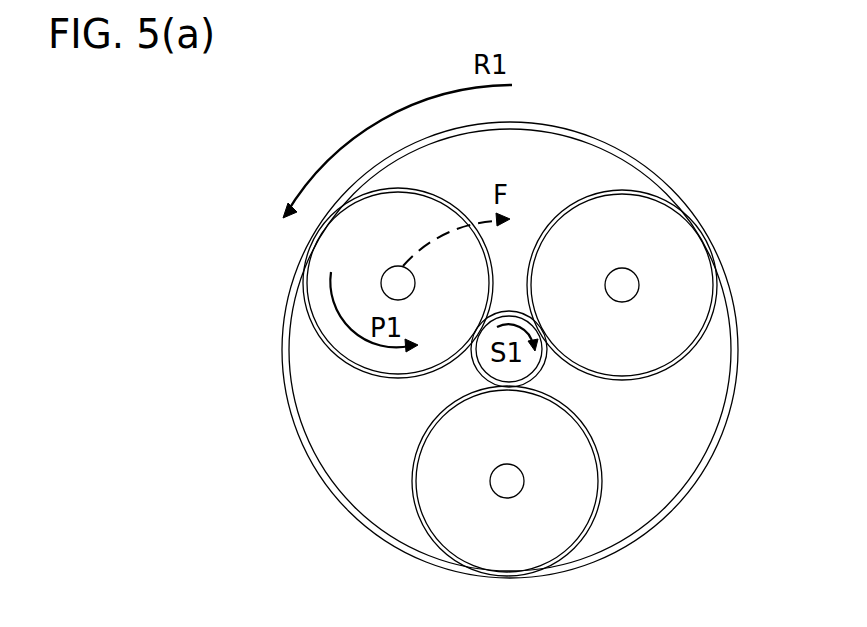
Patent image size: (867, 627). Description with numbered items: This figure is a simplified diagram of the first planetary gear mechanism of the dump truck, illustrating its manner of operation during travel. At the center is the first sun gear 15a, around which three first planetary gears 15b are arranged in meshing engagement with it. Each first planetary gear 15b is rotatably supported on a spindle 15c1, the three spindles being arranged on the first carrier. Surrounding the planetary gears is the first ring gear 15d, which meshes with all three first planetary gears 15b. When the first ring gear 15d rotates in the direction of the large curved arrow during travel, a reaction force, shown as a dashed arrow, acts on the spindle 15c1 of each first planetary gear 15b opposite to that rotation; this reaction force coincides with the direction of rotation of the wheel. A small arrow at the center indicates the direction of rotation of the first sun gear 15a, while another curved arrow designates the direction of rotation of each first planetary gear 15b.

The first sun gear 15a is at (472, 369).
The first planetary gear 15b is at (305, 287).
The spindle 15c1 is at (394, 282).
The first ring gear 15d is at (282, 356).